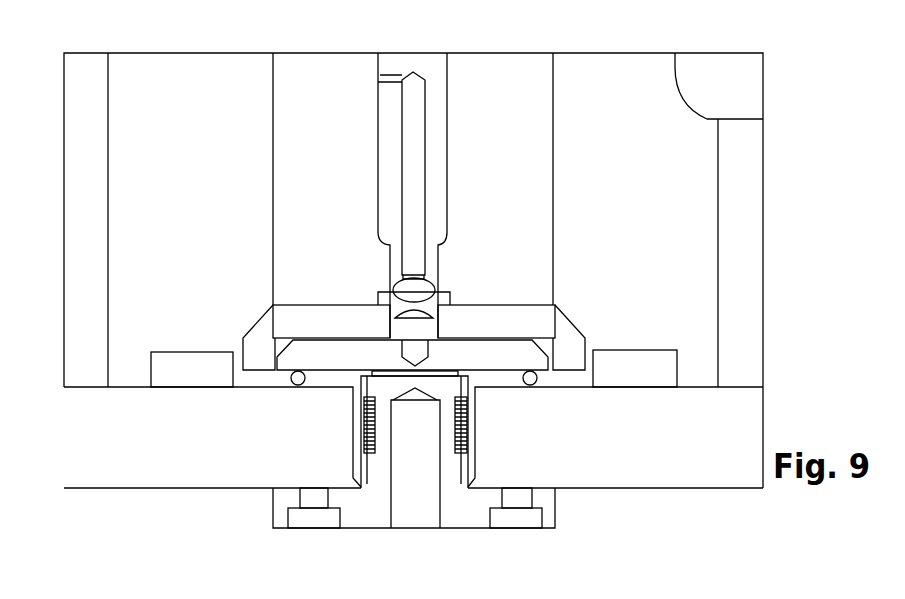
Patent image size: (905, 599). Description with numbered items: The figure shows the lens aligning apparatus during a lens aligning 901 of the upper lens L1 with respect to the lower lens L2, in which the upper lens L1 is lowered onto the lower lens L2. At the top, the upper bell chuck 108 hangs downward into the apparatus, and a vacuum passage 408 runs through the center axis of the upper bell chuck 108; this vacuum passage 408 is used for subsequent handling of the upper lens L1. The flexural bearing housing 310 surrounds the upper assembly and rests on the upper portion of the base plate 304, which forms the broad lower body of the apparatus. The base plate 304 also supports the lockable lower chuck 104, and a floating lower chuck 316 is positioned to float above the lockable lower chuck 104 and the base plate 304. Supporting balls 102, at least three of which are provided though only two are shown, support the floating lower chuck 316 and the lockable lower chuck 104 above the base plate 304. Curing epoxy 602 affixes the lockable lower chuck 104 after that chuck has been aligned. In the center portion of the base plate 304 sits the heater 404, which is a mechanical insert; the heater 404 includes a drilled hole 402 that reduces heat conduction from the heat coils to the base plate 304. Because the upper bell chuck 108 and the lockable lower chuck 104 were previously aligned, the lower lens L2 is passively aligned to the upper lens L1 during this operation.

The lens aligning 901 is at (157, 46).
The flexural bearing housing 310 is at (82, 223).
The upper bell chuck 108 is at (433, 153).
The vacuum passage 408 is at (413, 97).
The upper lens L1 is at (418, 286).
The lower lens L2 is at (387, 295).
The floating lower chuck 316 is at (382, 333).
The lockable lower chuck 104 is at (517, 368).
The curing epoxy 602 is at (412, 375).
The supporting balls 102 is at (295, 392).
The base plate 304 is at (121, 418).
The drilled hole 402 is at (407, 517).
The heater 404 is at (462, 510).